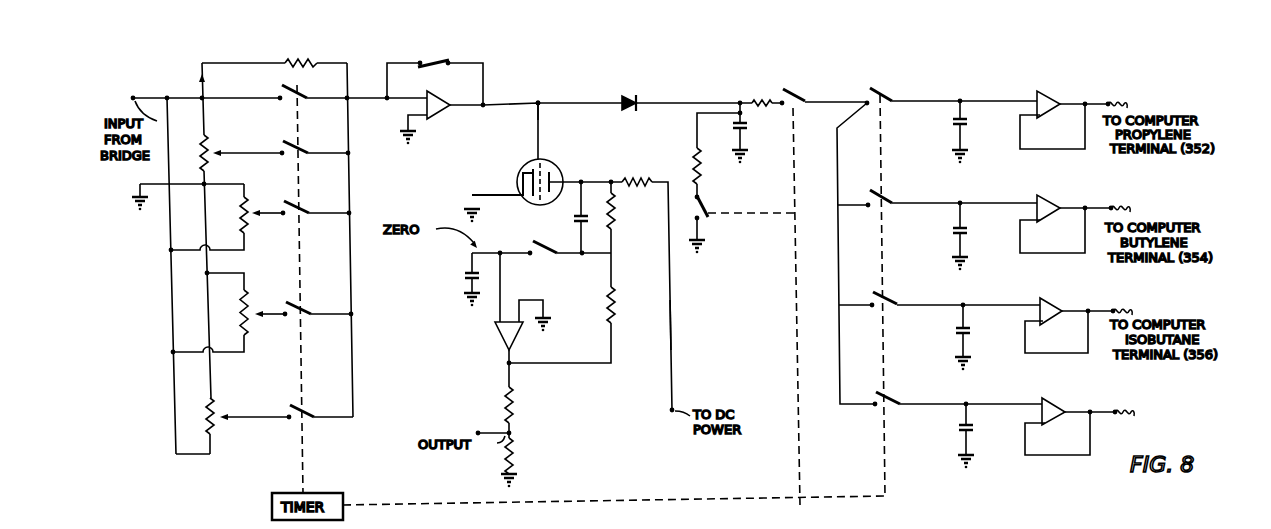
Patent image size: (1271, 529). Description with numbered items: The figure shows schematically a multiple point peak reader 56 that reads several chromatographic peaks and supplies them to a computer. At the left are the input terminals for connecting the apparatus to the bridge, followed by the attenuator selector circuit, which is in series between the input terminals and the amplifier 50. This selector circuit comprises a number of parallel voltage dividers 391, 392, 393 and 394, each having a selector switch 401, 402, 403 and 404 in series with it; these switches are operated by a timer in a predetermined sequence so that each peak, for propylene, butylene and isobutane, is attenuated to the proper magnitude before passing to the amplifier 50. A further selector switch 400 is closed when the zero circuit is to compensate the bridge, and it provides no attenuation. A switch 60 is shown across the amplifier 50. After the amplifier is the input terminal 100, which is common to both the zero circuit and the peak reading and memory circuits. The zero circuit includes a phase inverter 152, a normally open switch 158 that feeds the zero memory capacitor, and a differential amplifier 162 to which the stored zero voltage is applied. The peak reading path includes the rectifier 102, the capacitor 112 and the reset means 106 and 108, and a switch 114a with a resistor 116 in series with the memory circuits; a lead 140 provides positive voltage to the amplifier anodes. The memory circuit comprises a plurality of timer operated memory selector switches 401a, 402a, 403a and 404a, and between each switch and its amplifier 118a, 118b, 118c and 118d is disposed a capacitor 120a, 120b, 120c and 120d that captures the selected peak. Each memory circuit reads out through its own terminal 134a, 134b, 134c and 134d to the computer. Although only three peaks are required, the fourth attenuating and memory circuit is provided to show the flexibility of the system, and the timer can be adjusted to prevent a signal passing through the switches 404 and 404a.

The voltage divider 391 is at (208, 142).
The voltage divider 392 is at (246, 203).
The voltage divider 393 is at (248, 295).
The voltage divider 394 is at (212, 404).
The selector switch 400 is at (289, 92).
The timer-operated selector switch 401 is at (296, 146).
The timer-operated selector switch 402 is at (296, 204).
The timer-operated selector switch 403 is at (298, 300).
The timer-operated selector switch 404 is at (302, 407).
The amplifier 50 is at (442, 113).
The switch 60 is at (426, 63).
The multiple point peak reader 56 is at (513, 91).
The input terminal 100 is at (541, 102).
The phase inverter 152 is at (556, 167).
The rectifier 102 is at (636, 96).
The capacitor 112 is at (747, 128).
The resistor 116 is at (778, 106).
The switch 114a is at (790, 92).
The reset means 106 is at (696, 166).
The reset means 108 is at (706, 208).
The lead 140 is at (672, 325).
The normally open switch 158 is at (540, 246).
The differential amplifier 162 is at (498, 332).
The timer-operated memory selector switch 401a is at (884, 95).
The timer-operated memory selector switch 402a is at (884, 197).
The timer-operated memory selector switch 403a is at (887, 289).
The timer-operated memory selector switch 404a is at (887, 392).
The capacitor 120a is at (953, 123).
The capacitor 120b is at (953, 231).
The capacitor 120c is at (953, 330).
The capacitor 120d is at (953, 428).
The amplifier 118a is at (1043, 92).
The amplifier 118b is at (1040, 195).
The amplifier 118c is at (1041, 299).
The amplifier 118d is at (1046, 399).
The terminal 134a is at (1108, 101).
The terminal 134b is at (1111, 206).
The terminal 134c is at (1113, 308).
The terminal 134d is at (1115, 409).